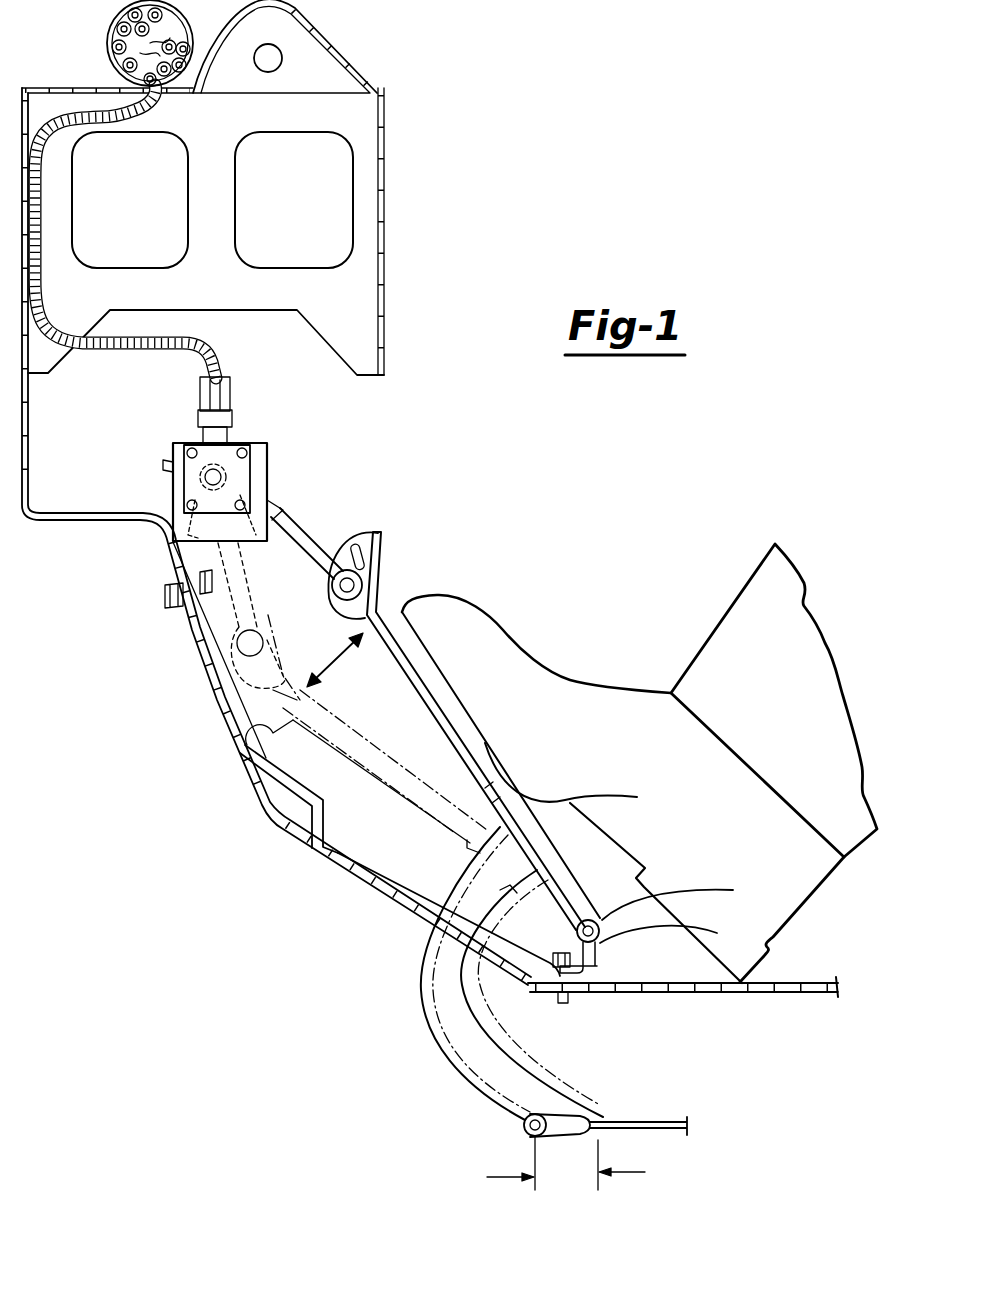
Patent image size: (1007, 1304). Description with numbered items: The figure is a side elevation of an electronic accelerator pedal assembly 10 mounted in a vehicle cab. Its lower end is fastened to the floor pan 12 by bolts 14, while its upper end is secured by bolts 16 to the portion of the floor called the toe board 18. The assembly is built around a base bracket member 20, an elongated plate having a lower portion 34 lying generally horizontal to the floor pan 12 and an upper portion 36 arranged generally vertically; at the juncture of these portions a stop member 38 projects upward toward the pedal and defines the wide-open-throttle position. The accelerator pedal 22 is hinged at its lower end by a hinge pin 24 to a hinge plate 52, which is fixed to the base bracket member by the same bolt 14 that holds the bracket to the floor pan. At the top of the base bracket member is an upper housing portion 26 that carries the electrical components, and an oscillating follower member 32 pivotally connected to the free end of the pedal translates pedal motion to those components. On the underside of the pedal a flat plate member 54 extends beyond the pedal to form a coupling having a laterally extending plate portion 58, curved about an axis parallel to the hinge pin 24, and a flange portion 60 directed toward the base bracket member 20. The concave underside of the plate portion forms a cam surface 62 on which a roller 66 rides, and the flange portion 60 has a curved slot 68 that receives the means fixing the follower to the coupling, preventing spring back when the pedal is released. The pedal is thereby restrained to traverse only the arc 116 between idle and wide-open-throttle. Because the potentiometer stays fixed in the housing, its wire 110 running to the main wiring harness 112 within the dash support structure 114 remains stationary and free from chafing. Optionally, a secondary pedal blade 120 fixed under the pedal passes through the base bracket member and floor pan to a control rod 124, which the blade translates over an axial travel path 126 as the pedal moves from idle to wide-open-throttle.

The accelerator pedal assembly 10 is at (216, 769).
The floor pan 12 is at (605, 982).
The bolts 14 is at (566, 998).
The bolts 16 is at (165, 598).
The toe board 18 is at (193, 637).
The base bracket member 20 is at (320, 870).
The accelerator pedal 22 is at (637, 797).
The hinge pin 24 is at (733, 890).
The upper housing portion 26 is at (187, 437).
The oscillating follower member 32 is at (280, 513).
The lower portion 34 is at (385, 905).
The upper portion 36 is at (173, 563).
The stop member 38 is at (247, 740).
The hinge plate 52 is at (717, 933).
The flat plate member 54 is at (397, 602).
The laterally extending plate portion 58 is at (385, 565).
The flange portion 60 is at (368, 538).
The cam surface 62 is at (355, 552).
The roller 66 is at (327, 600).
The curved slot 68 is at (335, 578).
The wire 110 is at (215, 350).
The main wiring harness 112 is at (110, 33).
The dash support structure 114 is at (384, 240).
The arc 116 is at (337, 660).
The secondary pedal blade 120 is at (425, 1013).
The control rod 124 is at (657, 1113).
The axial travel path 126 is at (566, 1164).